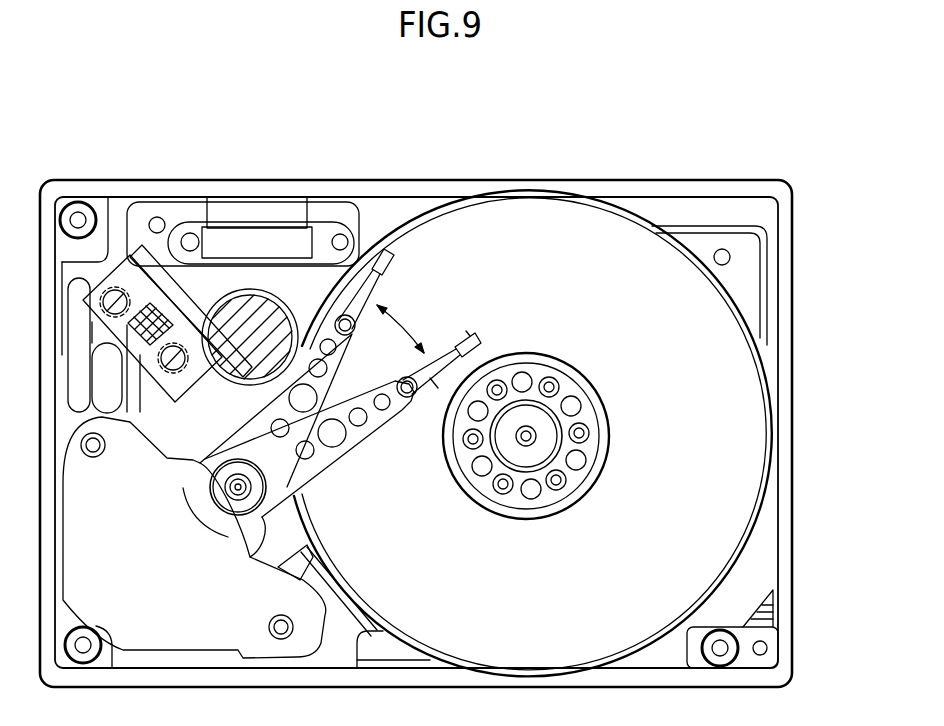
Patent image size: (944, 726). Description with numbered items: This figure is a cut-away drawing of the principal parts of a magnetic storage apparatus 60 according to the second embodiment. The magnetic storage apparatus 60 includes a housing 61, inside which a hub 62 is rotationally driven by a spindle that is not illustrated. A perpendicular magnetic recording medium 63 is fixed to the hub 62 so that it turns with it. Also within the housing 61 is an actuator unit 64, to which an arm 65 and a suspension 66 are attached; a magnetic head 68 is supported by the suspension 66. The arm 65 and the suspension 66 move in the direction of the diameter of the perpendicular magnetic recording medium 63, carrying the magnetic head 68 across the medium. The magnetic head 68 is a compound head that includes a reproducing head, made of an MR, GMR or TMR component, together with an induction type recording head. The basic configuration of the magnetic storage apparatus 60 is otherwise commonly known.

The magnetic storage apparatus 60 is at (165, 121).
The housing 61 is at (298, 180).
The hub 62 is at (583, 498).
The perpendicular magnetic recording medium 63 is at (737, 395).
The actuator unit 64 is at (260, 522).
The arm 65 is at (343, 487).
The suspension 66 is at (437, 352).
The magnetic head 68 is at (478, 340).